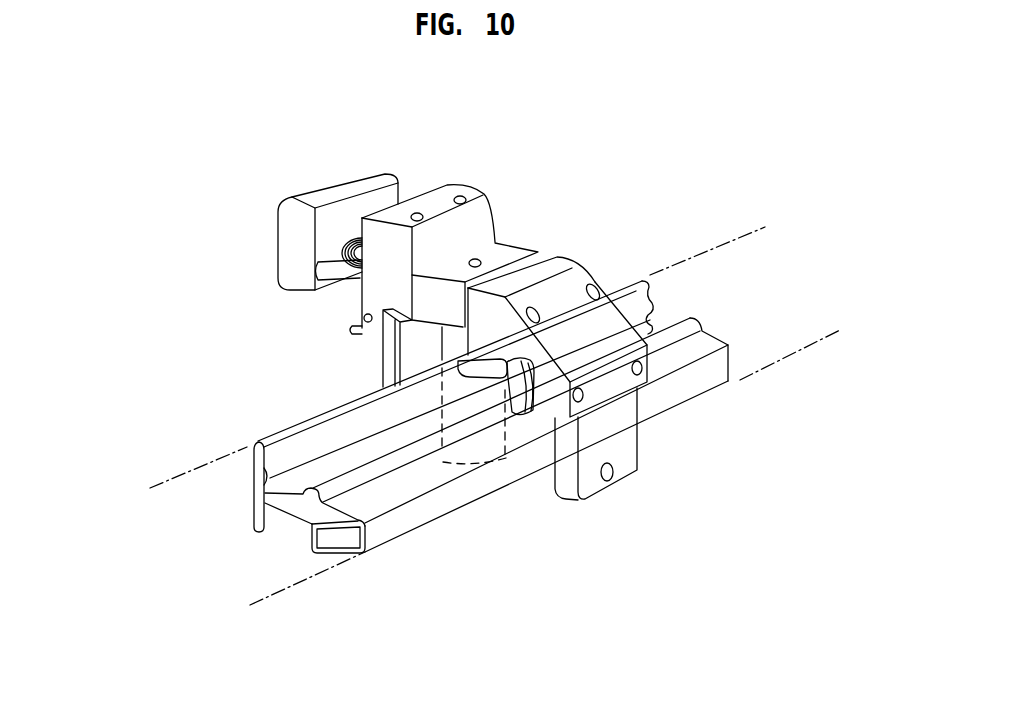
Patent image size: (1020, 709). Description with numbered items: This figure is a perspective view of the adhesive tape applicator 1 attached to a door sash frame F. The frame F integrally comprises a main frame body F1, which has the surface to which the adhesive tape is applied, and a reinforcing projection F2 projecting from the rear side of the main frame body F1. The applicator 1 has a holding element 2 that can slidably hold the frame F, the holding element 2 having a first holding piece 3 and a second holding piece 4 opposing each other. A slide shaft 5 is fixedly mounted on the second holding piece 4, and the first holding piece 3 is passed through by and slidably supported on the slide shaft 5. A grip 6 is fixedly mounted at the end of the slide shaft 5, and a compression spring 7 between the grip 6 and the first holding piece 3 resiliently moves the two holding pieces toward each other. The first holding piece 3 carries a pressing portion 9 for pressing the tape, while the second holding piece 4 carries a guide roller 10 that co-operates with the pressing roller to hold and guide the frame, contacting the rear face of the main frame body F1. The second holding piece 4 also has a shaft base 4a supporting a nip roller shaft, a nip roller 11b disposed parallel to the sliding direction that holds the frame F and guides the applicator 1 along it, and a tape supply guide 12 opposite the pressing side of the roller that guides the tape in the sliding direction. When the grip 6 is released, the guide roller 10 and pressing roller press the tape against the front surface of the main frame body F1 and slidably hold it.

The adhesive tape applicator 1 is at (679, 203).
The holding element 2 is at (615, 113).
The first holding piece 3 is at (498, 200).
The second holding piece 4 is at (603, 262).
The shaft base 4a is at (638, 460).
The slide shaft 5 is at (343, 290).
The grip 6 is at (317, 190).
The compression spring 7 is at (349, 258).
The pressing portion 9 is at (443, 455).
The guide roller 10 is at (468, 377).
The nip roller 11b is at (513, 416).
The tape supply guide 12 is at (378, 387).
The door sash frame F is at (250, 512).
The main frame body F1 is at (255, 439).
The reinforcing projection F2 is at (706, 340).